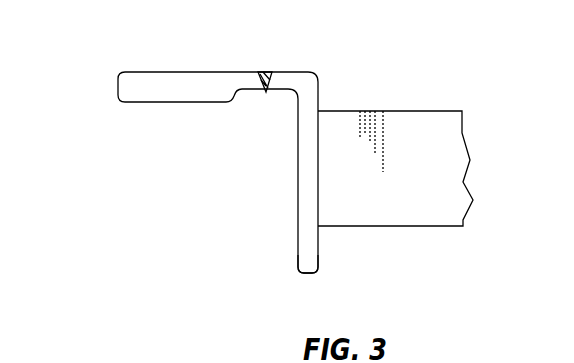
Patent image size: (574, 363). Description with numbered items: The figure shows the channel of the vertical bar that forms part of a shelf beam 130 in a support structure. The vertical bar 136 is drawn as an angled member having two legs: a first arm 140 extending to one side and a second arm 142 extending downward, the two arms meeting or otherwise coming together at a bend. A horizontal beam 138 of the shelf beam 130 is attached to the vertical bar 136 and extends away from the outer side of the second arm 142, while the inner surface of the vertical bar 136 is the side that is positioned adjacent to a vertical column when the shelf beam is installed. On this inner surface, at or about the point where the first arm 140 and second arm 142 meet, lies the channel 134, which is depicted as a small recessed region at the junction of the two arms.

The shelf beam 130 is at (254, 160).
The channel 134 is at (263, 72).
The vertical bar 136 is at (320, 253).
The horizontal beam 138 is at (395, 110).
The first arm 140 is at (117, 83).
The second arm 142 is at (310, 242).